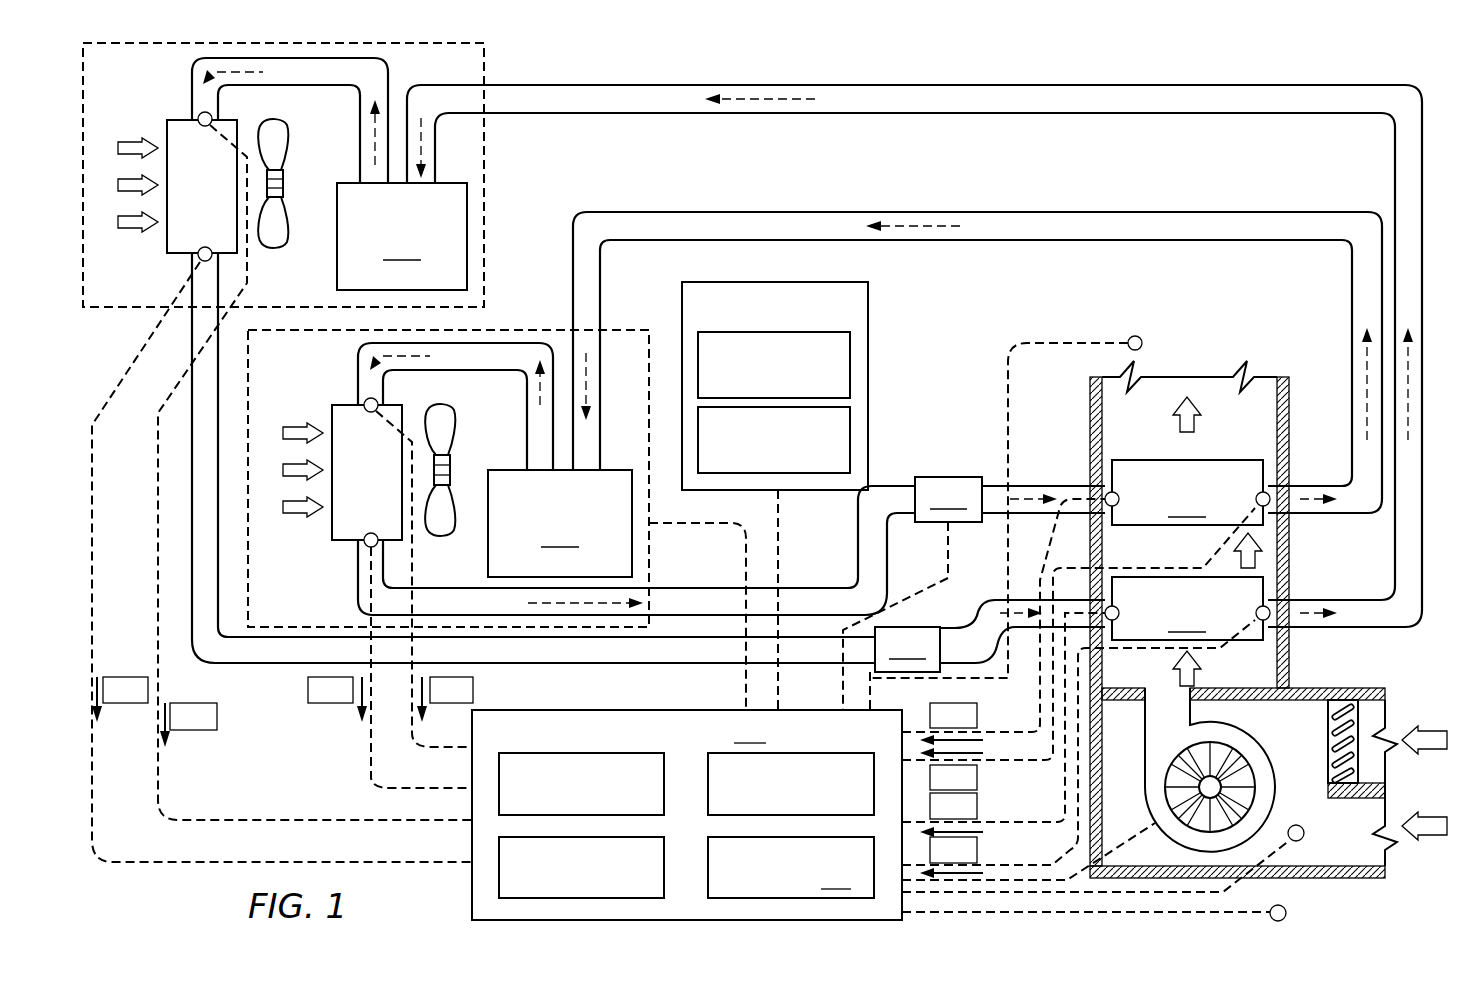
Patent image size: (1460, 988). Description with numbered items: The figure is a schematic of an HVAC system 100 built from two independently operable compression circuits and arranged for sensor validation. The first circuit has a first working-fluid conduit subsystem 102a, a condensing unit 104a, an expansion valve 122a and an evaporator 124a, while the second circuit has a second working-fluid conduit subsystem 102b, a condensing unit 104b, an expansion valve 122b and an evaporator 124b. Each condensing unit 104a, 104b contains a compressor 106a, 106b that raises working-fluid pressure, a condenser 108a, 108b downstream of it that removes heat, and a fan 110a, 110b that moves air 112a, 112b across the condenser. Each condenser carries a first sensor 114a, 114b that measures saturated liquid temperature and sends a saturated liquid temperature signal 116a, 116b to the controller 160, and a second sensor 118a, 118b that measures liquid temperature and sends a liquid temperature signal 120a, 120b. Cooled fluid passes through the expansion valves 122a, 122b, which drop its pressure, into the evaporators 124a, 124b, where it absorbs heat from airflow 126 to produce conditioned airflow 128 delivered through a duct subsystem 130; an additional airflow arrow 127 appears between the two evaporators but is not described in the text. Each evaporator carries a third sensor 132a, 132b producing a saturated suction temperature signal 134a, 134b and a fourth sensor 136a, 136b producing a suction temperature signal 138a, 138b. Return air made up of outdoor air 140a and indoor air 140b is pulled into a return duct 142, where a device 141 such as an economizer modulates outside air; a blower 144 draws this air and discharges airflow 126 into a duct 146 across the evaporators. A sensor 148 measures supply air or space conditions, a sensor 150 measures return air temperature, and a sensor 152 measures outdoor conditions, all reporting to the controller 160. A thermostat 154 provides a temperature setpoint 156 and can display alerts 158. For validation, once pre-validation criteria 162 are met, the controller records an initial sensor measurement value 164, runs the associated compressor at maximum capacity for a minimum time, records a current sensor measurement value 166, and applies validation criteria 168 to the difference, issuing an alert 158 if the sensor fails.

The HVAC system 100 is at (1252, 50).
The first working-fluid conduit subsystem 102a is at (682, 212).
The second working-fluid conduit subsystem 102b is at (283, 86).
The first condensing unit 104a is at (530, 330).
The second condensing unit 104b is at (484, 132).
The first compressor 106a is at (560, 523).
The second compressor 106b is at (402, 236).
The first condenser 108a is at (332, 525).
The second condenser 108b is at (167, 240).
The first fan 110a is at (451, 436).
The second fan 110b is at (284, 150).
The air across first condenser 112a is at (290, 422).
The air across second condenser 112b is at (125, 136).
The first sensor of first condenser 114a is at (368, 399).
The first sensor of second condenser 114b is at (202, 113).
The saturated liquid temperature signal 116a is at (473, 689).
The saturated liquid temperature signal 116b is at (196, 730).
The second sensor of first condenser 118a is at (365, 545).
The second sensor of second condenser 118b is at (210, 258).
The liquid temperature signal 120a is at (308, 691).
The liquid temperature signal 120b is at (122, 705).
The first expansion valve 122a is at (912, 593).
The second expansion valve 122b is at (905, 668).
The first evaporator 124a is at (1187, 492).
The second evaporator 124b is at (1187, 608).
The airflow 126 is at (1202, 660).
The airflow between evaporators 127 is at (1265, 550).
The conditioned airflow 128 is at (1202, 418).
The duct subsystem 130 is at (1290, 400).
The third sensor of first evaporator 132a is at (1114, 506).
The third sensor of second evaporator 132b is at (1114, 620).
The saturated suction temperature signal 134a is at (955, 700).
The saturated suction temperature signal 134b is at (978, 807).
The fourth sensor of first evaporator 136a is at (1270, 504).
The fourth sensor of second evaporator 136b is at (1290, 585).
The suction temperature signal 138a is at (978, 779).
The suction temperature signal 138b is at (978, 851).
The outdoor air 140a is at (1432, 758).
The indoor air 140b is at (1432, 846).
The device 141 is at (1358, 718).
The return duct 142 is at (1365, 878).
The blower 144 is at (1255, 740).
The duct 146 is at (1290, 648).
The sensor 148 is at (1143, 343).
The sensor 150 is at (1300, 822).
The sensor 152 is at (1287, 913).
The thermostat 154 is at (868, 303).
The temperature setpoint 156 is at (850, 362).
The alert 158 is at (850, 434).
The controller 160 is at (687, 815).
The pre-validation criteria 162 is at (578, 753).
The initial sensor measurement value 164 is at (499, 880).
The current sensor measurement value 166 is at (812, 753).
The validation criteria 168 is at (791, 867).